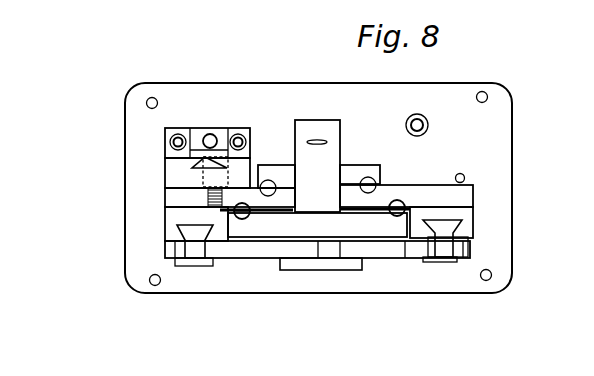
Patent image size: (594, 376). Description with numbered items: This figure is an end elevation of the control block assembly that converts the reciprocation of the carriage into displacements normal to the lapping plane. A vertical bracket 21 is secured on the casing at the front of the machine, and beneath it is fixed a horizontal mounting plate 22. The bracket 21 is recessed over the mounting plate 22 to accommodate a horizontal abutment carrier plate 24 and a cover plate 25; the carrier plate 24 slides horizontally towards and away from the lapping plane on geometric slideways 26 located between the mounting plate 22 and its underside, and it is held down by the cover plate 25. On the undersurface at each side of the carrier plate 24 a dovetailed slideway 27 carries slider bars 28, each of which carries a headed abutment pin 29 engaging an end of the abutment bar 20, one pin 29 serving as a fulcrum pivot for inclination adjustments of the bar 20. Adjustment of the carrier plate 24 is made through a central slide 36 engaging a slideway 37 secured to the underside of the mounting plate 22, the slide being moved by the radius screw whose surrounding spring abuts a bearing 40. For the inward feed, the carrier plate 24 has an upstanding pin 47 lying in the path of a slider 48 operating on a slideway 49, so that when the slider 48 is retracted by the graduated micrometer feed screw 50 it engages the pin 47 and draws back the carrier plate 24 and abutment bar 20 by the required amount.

The abutment bar 20 is at (270, 250).
The vertical bracket 21 is at (308, 122).
The mounting plate 22 is at (367, 225).
The abutment carrier plate 24 is at (173, 202).
The cover plate 25 is at (282, 167).
The geometric slideways 26 is at (243, 220).
The dovetailed slideway 27 is at (178, 220).
The slider bars 28 is at (193, 232).
The headed abutment pin 29 is at (196, 241).
The central slide 36 is at (321, 240).
The slideway 37 is at (340, 243).
The bearing 40 is at (490, 127).
The upstanding pin 47 is at (200, 176).
The slider 48 is at (203, 163).
The slideway 49 is at (182, 162).
The graduated micrometer screw 50 is at (211, 134).